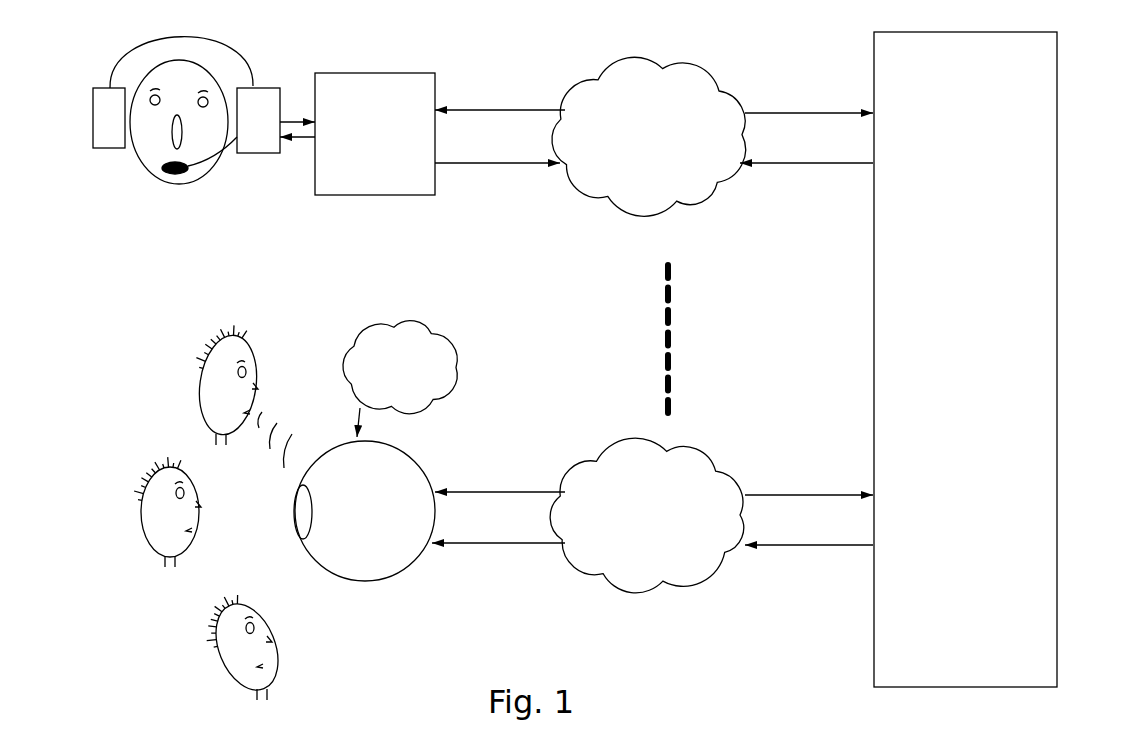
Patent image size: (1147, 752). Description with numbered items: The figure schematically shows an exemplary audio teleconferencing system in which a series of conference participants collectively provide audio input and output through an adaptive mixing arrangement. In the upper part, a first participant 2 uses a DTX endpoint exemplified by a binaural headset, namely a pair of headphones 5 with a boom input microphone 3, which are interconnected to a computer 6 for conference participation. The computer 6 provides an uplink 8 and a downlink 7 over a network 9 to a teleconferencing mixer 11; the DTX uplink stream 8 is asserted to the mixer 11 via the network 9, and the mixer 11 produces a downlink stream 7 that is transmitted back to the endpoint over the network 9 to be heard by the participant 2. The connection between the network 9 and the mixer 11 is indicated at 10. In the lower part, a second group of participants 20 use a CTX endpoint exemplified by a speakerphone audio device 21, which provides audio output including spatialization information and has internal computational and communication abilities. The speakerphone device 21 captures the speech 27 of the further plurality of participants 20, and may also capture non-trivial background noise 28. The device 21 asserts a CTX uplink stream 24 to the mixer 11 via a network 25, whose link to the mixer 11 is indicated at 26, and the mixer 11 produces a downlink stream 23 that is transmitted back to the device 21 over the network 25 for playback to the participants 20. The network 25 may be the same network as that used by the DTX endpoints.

The first participant 2 is at (216, 159).
The input microphone 3 is at (180, 184).
The headphones 5 is at (252, 62).
The computer 6 is at (390, 74).
The downlink 7 is at (510, 72).
The uplink 8 is at (513, 190).
The network 9 is at (686, 56).
The network-mixer connection 10 is at (800, 94).
The mixer 11 is at (1060, 44).
The second group of participants 20 is at (110, 423).
The audio device 21 is at (414, 439).
The downlink channel 23 is at (524, 462).
The uplink channel 24 is at (488, 551).
The network 25 is at (682, 578).
The network-mixer connection 26 is at (798, 554).
The speech 27 is at (285, 404).
The noise 28 is at (354, 326).